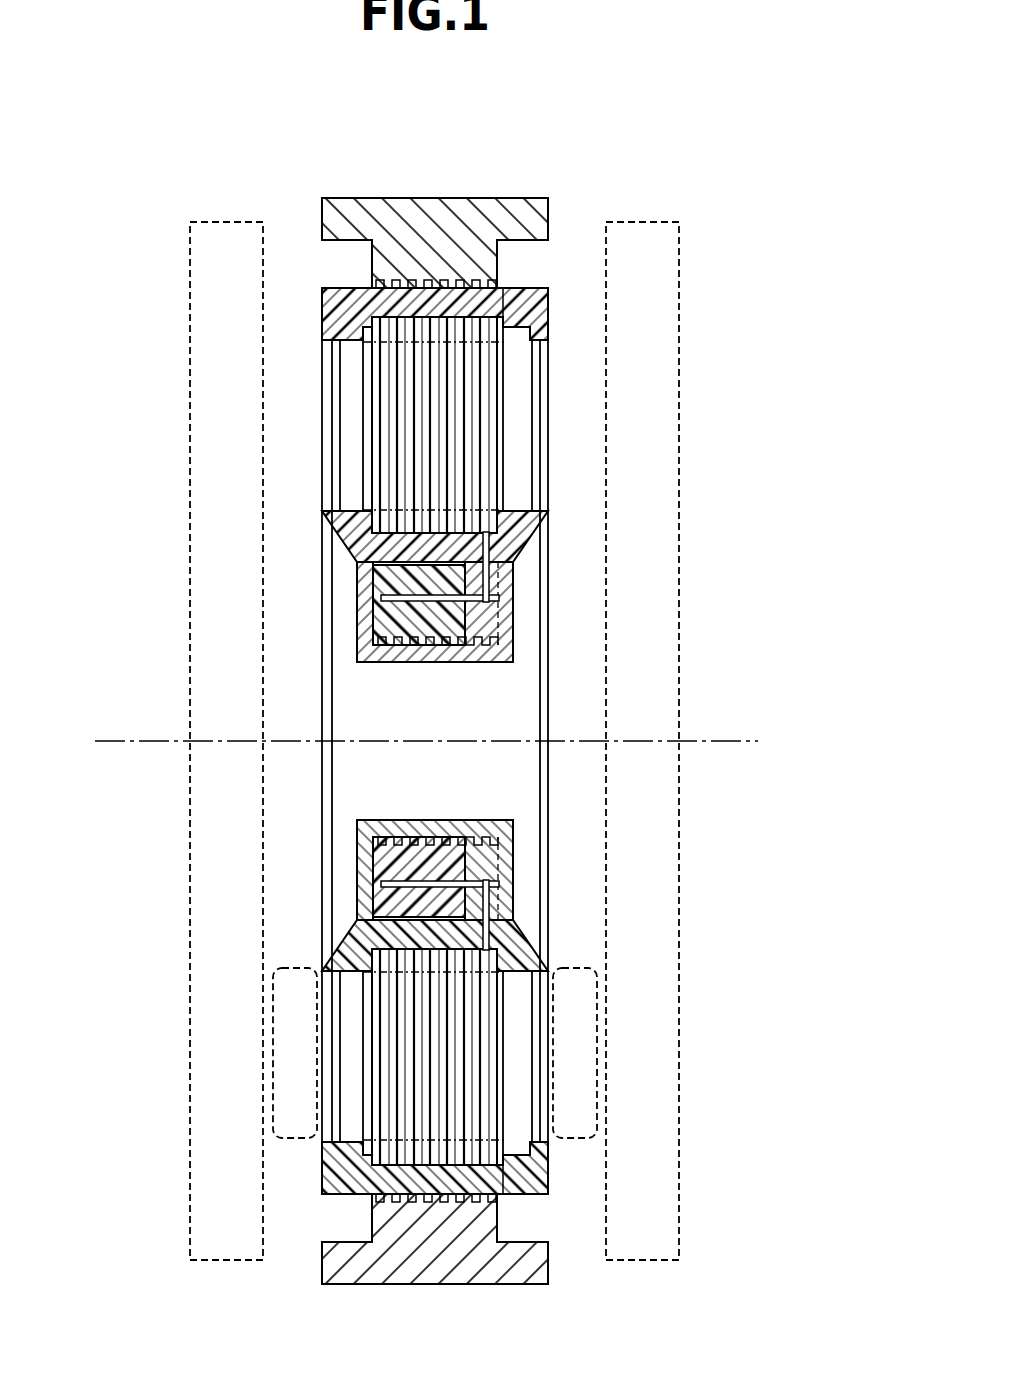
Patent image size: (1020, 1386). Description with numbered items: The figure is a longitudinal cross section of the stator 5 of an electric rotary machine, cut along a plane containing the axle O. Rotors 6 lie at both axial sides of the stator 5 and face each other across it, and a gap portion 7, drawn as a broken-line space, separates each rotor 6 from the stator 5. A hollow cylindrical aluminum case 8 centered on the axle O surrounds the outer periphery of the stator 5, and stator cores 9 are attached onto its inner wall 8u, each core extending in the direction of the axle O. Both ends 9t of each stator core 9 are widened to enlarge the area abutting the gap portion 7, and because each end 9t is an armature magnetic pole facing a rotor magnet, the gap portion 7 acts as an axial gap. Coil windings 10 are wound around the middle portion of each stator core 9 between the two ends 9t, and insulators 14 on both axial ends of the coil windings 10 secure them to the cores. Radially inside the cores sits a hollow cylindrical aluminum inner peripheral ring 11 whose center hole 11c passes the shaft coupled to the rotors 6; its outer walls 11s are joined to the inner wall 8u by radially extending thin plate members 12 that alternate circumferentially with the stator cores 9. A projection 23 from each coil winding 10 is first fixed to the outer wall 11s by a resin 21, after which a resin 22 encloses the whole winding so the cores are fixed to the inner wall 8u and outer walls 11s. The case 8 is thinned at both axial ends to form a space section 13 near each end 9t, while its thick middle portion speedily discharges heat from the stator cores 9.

The stator 5 is at (423, 188).
The rotor 6 is at (228, 222).
The gap portion 7 is at (298, 1140).
The case 8 is at (500, 198).
The inner wall 8u is at (482, 290).
The stator core 9 is at (340, 312).
The stator core end 9t is at (342, 515).
The coil winding 10 is at (395, 412).
The inner peripheral ring 11 is at (363, 590).
The center hole 11c is at (453, 665).
The outer wall 11s is at (365, 635).
The thin plate member 12 is at (375, 550).
The space section 13 is at (345, 262).
The insulator 14 is at (365, 360).
The resin 21 is at (440, 622).
The resin 22 is at (525, 315).
The projection 23 is at (415, 600).
The axle O is at (438, 742).